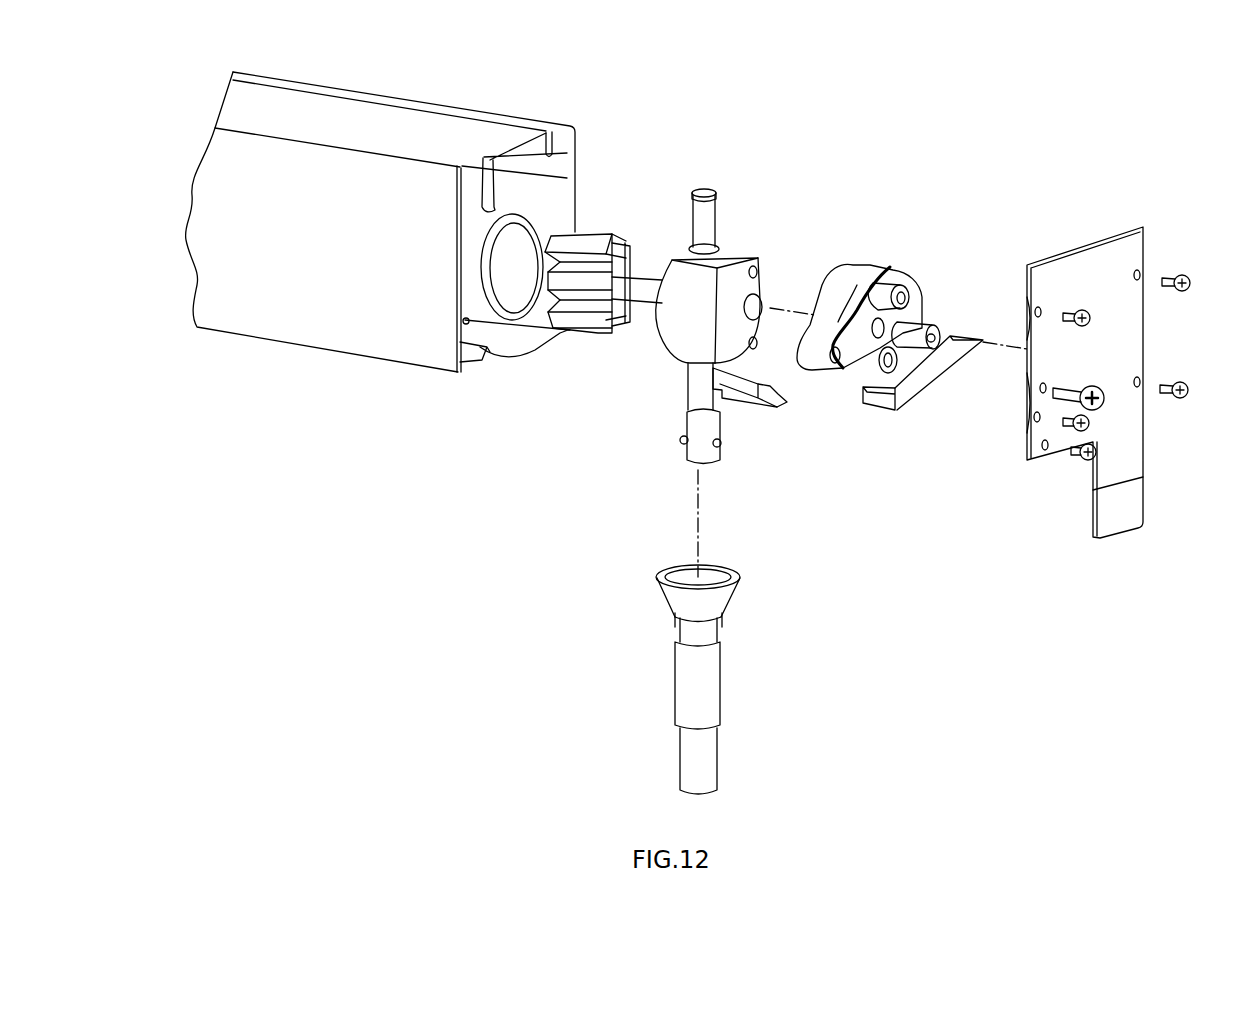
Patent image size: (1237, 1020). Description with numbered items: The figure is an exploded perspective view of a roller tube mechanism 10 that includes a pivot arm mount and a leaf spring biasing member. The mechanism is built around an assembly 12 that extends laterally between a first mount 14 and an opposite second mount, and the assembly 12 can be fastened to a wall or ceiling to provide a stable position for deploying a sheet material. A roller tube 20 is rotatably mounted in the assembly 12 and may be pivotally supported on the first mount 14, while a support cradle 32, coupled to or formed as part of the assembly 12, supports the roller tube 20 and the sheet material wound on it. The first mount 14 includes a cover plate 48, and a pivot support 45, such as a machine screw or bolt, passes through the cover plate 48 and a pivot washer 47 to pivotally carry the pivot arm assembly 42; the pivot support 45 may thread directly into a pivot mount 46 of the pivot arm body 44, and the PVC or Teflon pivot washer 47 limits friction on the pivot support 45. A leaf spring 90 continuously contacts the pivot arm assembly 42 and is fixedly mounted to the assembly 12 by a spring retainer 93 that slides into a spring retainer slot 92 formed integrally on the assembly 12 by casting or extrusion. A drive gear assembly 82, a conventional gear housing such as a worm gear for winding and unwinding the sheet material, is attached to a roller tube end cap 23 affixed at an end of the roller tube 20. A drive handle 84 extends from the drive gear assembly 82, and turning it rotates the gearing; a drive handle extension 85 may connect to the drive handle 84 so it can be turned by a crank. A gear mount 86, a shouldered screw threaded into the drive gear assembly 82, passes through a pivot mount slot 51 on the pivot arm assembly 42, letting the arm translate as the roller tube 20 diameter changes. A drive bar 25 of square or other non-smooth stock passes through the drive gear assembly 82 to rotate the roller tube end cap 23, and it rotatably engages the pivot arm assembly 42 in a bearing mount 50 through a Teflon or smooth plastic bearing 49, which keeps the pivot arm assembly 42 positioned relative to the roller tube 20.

The roller tube mechanism 10 is at (488, 95).
The assembly 12 is at (517, 114).
The first mount 14 is at (1153, 222).
The roller tube 20 is at (528, 280).
The roller tube end cap 23 is at (617, 331).
The drive bar 25 is at (647, 279).
The support cradle 32 is at (490, 351).
The pivot arm assembly 42 is at (878, 260).
The pivot arm body 44 is at (900, 277).
The pivot support 45 is at (1095, 384).
The pivot mount 46 is at (833, 358).
The pivot washer 47 is at (895, 371).
The cover plate 48 is at (1143, 442).
The bearing 49 is at (950, 375).
The bearing mount 50 is at (873, 335).
The pivot mount slot 51 is at (868, 298).
The drive gear assembly 82 is at (732, 258).
The drive handle 84 is at (718, 423).
The drive handle extension 85 is at (722, 673).
The gear mount 86 is at (903, 286).
The leaf spring 90 is at (905, 411).
The spring retainer slot 92 is at (463, 323).
The spring retainer 93 is at (780, 403).